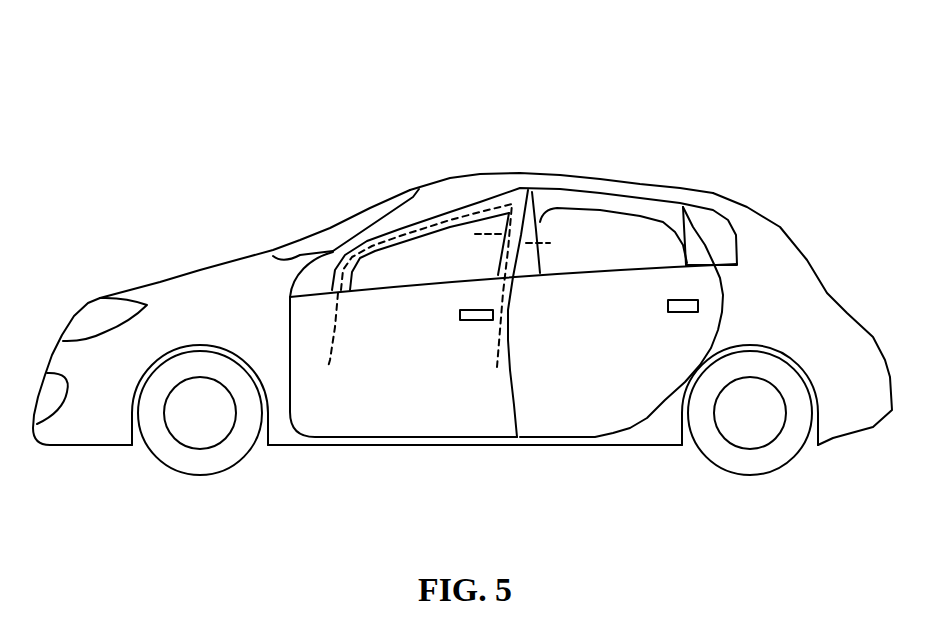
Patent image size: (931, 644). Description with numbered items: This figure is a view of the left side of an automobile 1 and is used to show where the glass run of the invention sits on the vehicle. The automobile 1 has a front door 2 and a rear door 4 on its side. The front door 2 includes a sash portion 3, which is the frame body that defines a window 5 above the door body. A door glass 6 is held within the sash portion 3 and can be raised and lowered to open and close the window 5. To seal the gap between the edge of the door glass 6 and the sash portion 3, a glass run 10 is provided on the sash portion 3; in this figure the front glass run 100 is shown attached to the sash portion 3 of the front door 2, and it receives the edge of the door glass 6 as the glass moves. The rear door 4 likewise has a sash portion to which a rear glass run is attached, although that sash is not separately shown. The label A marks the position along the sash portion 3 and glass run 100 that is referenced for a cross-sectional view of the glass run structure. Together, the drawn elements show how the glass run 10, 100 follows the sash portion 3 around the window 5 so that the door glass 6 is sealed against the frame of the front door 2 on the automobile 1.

The automobile 1 is at (462, 266).
The front door 2 is at (395, 413).
The sash portion 3 is at (450, 250).
The rear door 4 is at (597, 413).
The window 5 is at (435, 220).
The door glass 6 is at (468, 228).
The glass run 10 is at (530, 262).
The front glass run 100 is at (383, 237).
The cross-section position A is at (490, 235).